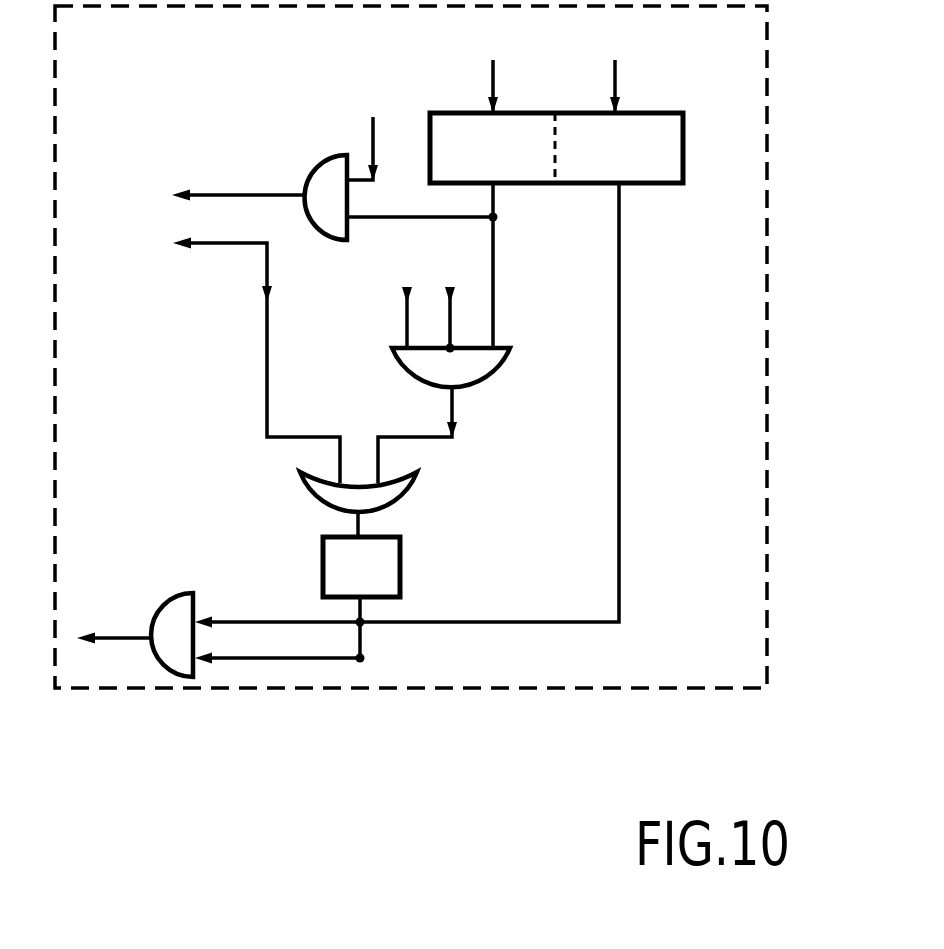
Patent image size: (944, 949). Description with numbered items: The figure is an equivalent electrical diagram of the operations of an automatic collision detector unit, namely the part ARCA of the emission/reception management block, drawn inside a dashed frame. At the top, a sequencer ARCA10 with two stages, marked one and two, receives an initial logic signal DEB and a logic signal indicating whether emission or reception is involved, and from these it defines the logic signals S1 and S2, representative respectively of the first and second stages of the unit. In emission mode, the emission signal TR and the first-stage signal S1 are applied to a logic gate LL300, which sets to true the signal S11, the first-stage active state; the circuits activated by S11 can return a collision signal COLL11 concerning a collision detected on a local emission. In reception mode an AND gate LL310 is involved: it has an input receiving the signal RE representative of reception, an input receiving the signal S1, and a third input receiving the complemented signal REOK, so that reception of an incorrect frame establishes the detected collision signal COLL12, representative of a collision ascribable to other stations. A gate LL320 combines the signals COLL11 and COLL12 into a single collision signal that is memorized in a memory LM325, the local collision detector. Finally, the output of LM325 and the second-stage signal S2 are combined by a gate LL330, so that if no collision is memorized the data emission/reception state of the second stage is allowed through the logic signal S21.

The part of emission/reception management block ARCA is at (766, 282).
The sequencer ARCA10 is at (440, 113).
The initial logic signal DEB is at (490, 69).
The first-stage logic signal S1 is at (510, 265).
The second-stage logic signal S2 is at (424, 405).
The logic gate LL300 is at (322, 240).
The emission mode signal TR is at (353, 140).
The first-stage active-state signal S11 is at (254, 193).
The local emission collision signal COLL11 is at (247, 361).
The AND gate LL310 is at (497, 372).
The reception signal RE is at (395, 299).
The correct reception signal REOK is at (456, 301).
The reception collision signal COLL12 is at (461, 435).
The AND gate LL320 is at (403, 494).
The local collision detector memory LM325 is at (401, 570).
The logic gate LL330 is at (184, 592).
The second-stage emission/reception enable signal S21 is at (117, 630).